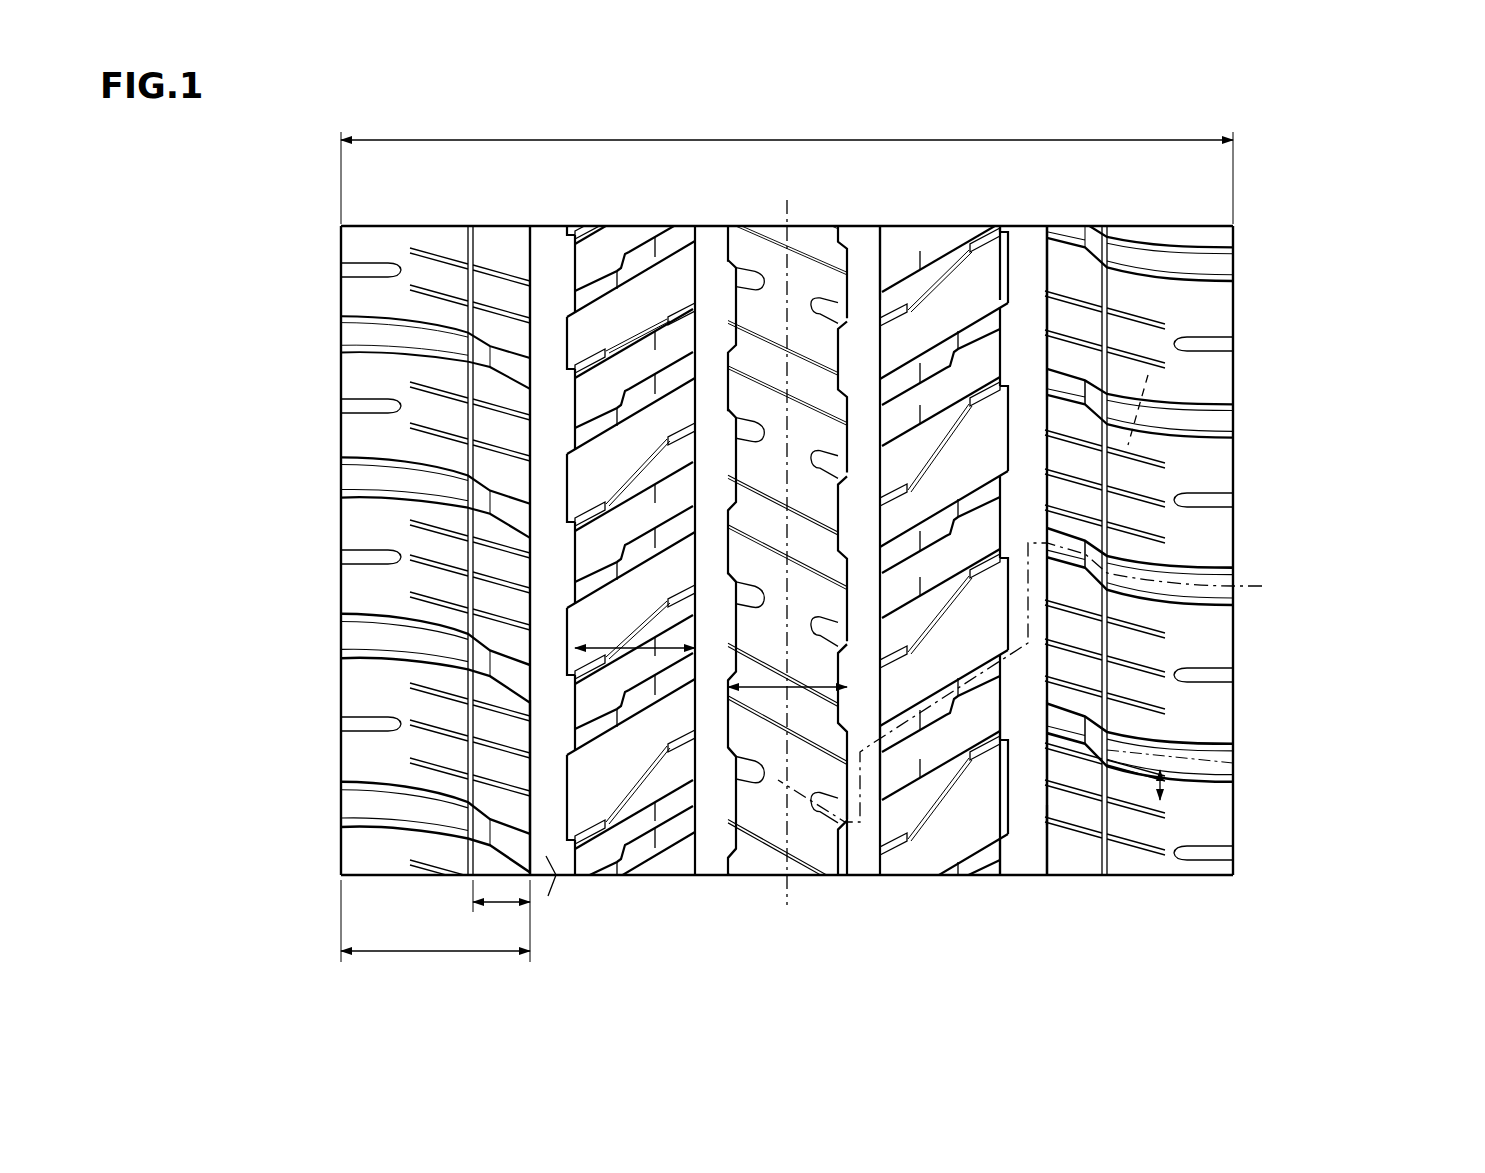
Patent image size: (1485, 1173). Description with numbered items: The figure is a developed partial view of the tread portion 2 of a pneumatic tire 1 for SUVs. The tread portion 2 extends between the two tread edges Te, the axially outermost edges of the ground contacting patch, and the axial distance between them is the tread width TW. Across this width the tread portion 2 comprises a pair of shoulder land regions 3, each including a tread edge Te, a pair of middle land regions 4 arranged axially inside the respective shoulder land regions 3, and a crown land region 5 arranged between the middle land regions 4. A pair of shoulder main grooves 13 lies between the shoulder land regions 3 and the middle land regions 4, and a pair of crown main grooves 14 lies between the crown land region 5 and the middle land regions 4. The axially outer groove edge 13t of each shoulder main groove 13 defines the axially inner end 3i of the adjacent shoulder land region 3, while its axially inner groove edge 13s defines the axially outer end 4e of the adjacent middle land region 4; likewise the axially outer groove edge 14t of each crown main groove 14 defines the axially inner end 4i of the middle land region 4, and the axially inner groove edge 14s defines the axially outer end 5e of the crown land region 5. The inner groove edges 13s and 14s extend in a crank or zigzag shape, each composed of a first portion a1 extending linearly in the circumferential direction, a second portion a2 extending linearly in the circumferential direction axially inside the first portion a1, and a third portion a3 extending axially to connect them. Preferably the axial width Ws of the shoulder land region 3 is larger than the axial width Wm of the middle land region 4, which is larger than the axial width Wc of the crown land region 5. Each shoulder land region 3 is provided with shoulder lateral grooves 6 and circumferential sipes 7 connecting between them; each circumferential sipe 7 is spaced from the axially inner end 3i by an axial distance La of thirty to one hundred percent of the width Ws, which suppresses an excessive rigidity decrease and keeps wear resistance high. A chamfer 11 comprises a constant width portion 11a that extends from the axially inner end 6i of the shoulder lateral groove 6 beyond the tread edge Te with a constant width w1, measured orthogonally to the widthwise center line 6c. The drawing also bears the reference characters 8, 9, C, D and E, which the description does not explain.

The pneumatic tire 1 is at (1410, 188).
The tread portion 2 is at (1343, 200).
The shoulder land region 3 is at (405, 222).
The axially inner end of the shoulder land region 3i is at (1043, 291).
The middle land region 4 is at (625, 222).
The axially inner end of the middle land region 4i is at (899, 245).
The axially outer end of the middle land region 4e is at (1012, 262).
The crown land region 5 is at (818, 222).
The axially outer end of the crown land region 5e is at (846, 835).
The shoulder lateral groove 6 is at (396, 641).
The axially inner end of the shoulder lateral groove 6i is at (1003, 815).
The widthwise center line of the shoulder lateral groove 6c is at (1200, 774).
The circumferential sipe 7 is at (486, 599).
The shoulder sipe 8 is at (431, 736).
The shoulder notch 9 is at (366, 556).
The chamfer 11 is at (1150, 380).
The constant width portion 11a is at (1117, 723).
The shoulder main groove 13 is at (553, 248).
The axially inner groove edge of the shoulder main groove 13s is at (1040, 735).
The axially outer groove edge of the shoulder main groove 13t is at (1052, 812).
The crown main groove 14 is at (710, 250).
The axially inner groove edge of the crown main groove 14s is at (841, 852).
The axially outer groove edge of the crown main groove 14t is at (885, 740).
The first portion a1 is at (568, 345).
The second portion a2 is at (574, 408).
The third portion a3 is at (575, 400).
The tread edge Te is at (341, 228).
The tread width TW is at (787, 164).
The axial width of the middle land region Wm is at (700, 641).
The axial width of the crown land region Wc is at (806, 692).
The axial width of the shoulder land region Ws is at (435, 935).
The axial distance La is at (501, 910).
The constant width w1 is at (1161, 801).
The tire equator C is at (787, 536).
The section line D- D is at (1150, 381).
The section line E- E is at (1265, 584).